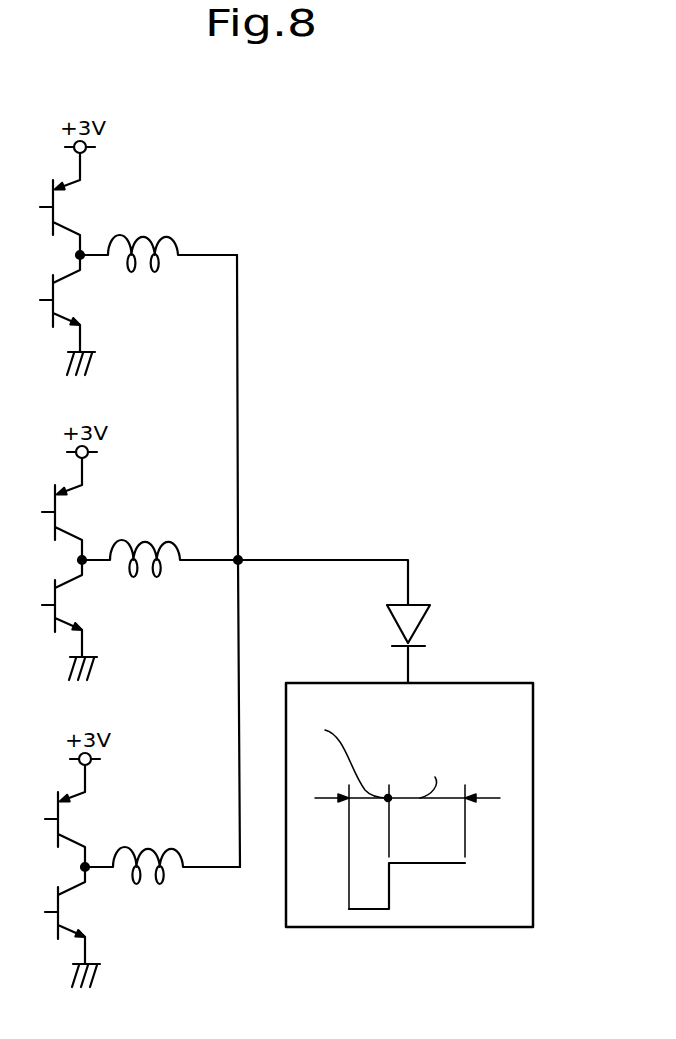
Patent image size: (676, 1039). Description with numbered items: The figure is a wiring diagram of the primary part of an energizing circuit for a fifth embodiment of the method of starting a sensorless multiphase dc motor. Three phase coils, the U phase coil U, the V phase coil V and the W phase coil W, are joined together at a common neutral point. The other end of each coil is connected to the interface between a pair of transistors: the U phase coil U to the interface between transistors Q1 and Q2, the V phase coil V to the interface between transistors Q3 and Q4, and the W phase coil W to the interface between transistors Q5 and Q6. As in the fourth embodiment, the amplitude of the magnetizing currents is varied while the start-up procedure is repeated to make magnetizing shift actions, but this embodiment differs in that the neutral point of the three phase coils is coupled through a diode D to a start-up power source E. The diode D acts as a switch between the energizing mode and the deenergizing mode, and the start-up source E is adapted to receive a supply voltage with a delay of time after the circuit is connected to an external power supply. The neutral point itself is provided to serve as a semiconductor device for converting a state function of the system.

The transistor Q1 is at (64, 204).
The transistor Q2 is at (67, 315).
The transistor Q3 is at (66, 509).
The transistor Q4 is at (69, 620).
The transistor Q5 is at (69, 816).
The transistor Q6 is at (72, 927).
The U phase coil U is at (158, 245).
The V phase coil V is at (160, 550).
The W phase coil W is at (162, 856).
The diode D is at (418, 603).
The start-up source E is at (535, 837).